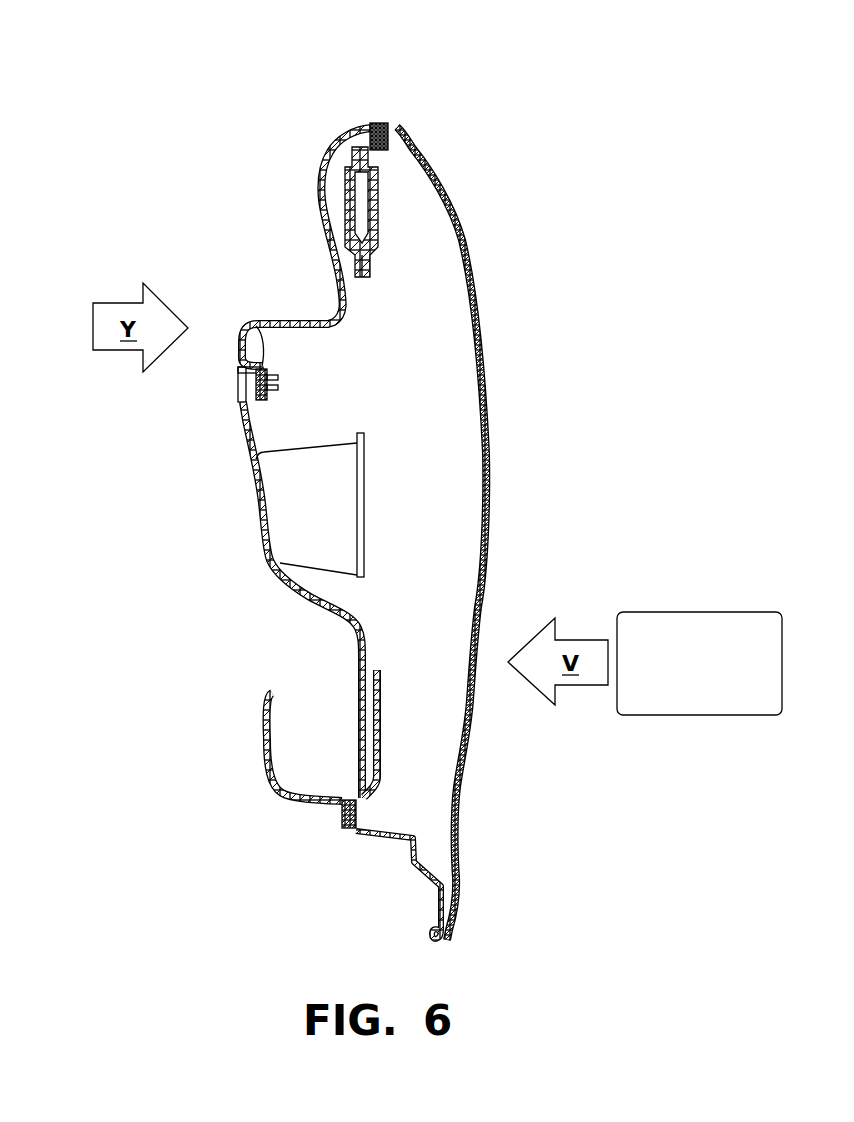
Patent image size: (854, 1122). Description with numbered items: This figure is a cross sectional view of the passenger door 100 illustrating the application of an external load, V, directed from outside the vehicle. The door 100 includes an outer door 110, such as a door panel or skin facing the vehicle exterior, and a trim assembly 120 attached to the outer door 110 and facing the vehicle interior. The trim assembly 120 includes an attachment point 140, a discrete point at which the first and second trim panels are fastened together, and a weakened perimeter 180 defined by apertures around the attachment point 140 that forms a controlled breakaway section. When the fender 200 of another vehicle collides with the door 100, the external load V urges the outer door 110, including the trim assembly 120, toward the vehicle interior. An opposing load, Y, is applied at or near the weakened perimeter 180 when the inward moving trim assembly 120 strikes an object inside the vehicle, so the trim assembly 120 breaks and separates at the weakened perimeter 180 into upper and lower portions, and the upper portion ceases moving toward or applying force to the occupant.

The passenger door 100 is at (355, 98).
The outer door 110 is at (484, 220).
The trim assembly 120 is at (252, 565).
The attachment point 140 is at (256, 326).
The weakened perimeter 180 is at (230, 347).
The fender 200 is at (717, 675).